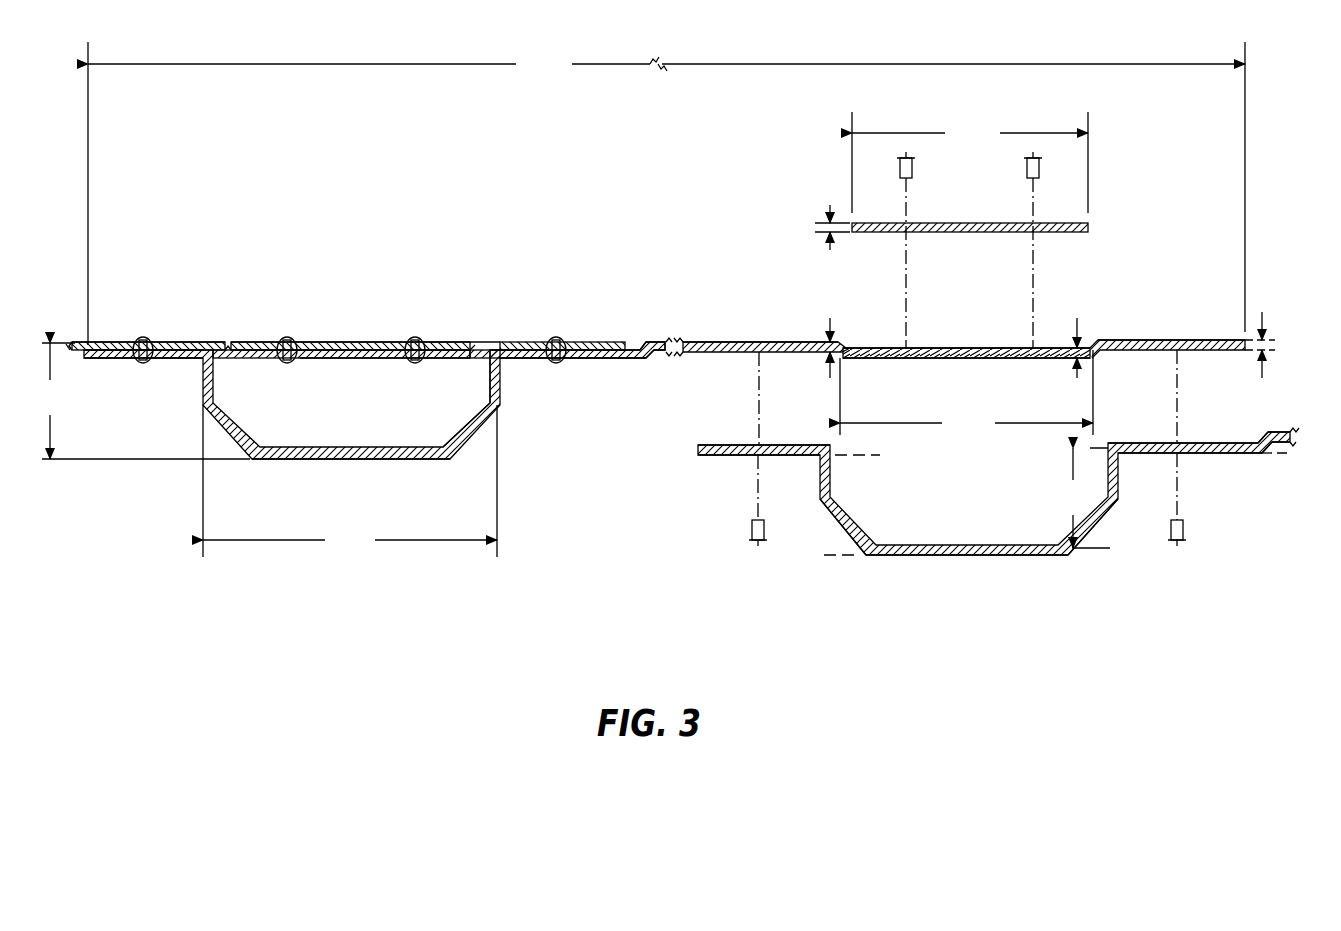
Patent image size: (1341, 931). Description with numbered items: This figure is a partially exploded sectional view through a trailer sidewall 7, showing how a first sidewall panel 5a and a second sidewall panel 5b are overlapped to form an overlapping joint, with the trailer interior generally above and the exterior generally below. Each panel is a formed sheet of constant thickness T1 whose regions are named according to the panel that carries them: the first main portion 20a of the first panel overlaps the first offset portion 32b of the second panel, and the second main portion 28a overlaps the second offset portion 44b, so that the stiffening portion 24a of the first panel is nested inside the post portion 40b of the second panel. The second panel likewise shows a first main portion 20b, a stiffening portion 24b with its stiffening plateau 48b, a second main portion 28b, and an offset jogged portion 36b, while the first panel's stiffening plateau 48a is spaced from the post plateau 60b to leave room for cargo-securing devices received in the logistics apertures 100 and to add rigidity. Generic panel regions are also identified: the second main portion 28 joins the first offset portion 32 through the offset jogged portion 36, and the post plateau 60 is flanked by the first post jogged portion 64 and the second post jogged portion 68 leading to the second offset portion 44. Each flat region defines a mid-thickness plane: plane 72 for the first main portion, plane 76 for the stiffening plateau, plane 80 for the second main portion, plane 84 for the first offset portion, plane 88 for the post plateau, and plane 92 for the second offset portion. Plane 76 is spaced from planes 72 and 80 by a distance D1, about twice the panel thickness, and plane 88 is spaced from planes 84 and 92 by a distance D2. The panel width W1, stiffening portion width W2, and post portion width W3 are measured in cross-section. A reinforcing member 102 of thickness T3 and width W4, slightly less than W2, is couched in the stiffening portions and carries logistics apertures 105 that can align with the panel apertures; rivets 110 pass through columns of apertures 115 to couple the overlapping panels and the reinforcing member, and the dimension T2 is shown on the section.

The sidewall 7 is at (378, 172).
The first sidewall panel 5a is at (198, 243).
The second sidewall panel 5b is at (280, 482).
The first main portion 20a is at (575, 342).
The first main portion 20b is at (1218, 340).
The stiffening portion 24a is at (322, 375).
The stiffening portion 24b is at (990, 328).
The second main portion 28 is at (1280, 440).
The second main portion 28a is at (88, 342).
The second main portion 28b is at (690, 342).
The first offset portion 32 is at (1152, 443).
The first offset portion 32b is at (565, 358).
The offset jogged portion 36 is at (1262, 442).
The offset jogged portion 36b is at (648, 360).
The post portion 40b is at (467, 470).
The second offset portion 44 is at (780, 445).
The second offset portion 44b is at (170, 360).
The stiffening plateau 48a is at (390, 358).
The stiffening plateau 48b is at (925, 358).
The post plateau 60 is at (965, 558).
The post plateau 60b is at (380, 459).
The first post jogged portion 64 is at (1110, 505).
The second post jogged portion 68 is at (828, 510).
The plane 72 is at (1118, 342).
The plane 76 is at (880, 360).
The plane 80 is at (798, 342).
The plane 84 is at (1278, 444).
The plane 88 is at (834, 556).
The plane 92 is at (848, 455).
The logistics apertures 100 is at (358, 358).
The reinforcing member 102 is at (465, 343).
The logistics apertures 105 is at (360, 345).
The rivets 110 is at (290, 338).
The apertures 115 is at (286, 341).
The width of sidewall panel W1 is at (666, 193).
The width of stiffening portion W2 is at (966, 393).
The width of post portion W3 is at (350, 481).
The width of reinforcing member W4 is at (970, 162).
The thickness of sidewall panel T1 is at (1263, 330).
The channel depth T2 is at (144, 401).
The thickness of reinforcing member T3 is at (832, 214).
The distance D1 is at (956, 336).
The distance D2 is at (1084, 498).